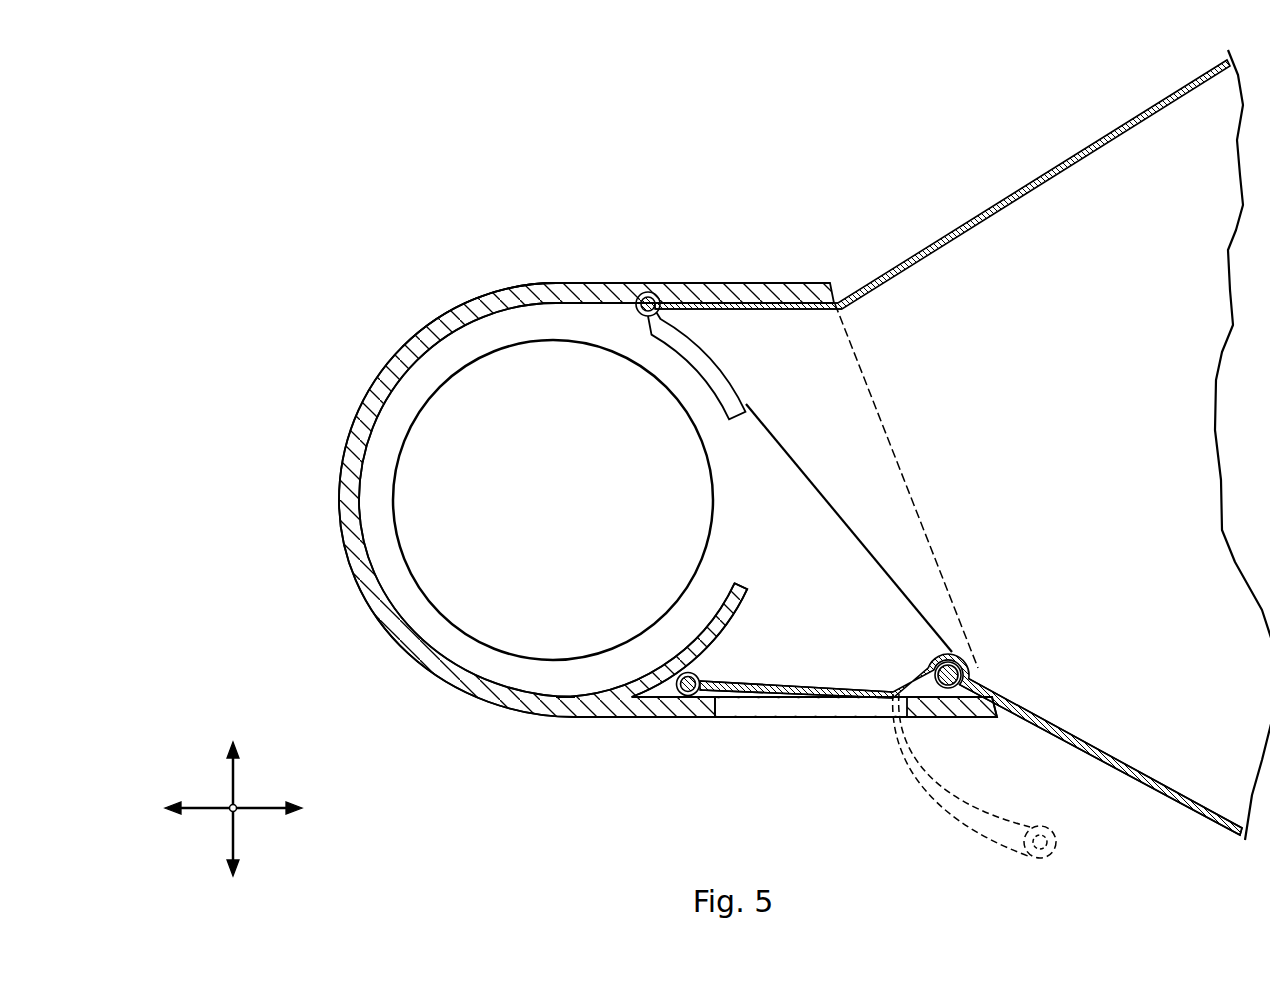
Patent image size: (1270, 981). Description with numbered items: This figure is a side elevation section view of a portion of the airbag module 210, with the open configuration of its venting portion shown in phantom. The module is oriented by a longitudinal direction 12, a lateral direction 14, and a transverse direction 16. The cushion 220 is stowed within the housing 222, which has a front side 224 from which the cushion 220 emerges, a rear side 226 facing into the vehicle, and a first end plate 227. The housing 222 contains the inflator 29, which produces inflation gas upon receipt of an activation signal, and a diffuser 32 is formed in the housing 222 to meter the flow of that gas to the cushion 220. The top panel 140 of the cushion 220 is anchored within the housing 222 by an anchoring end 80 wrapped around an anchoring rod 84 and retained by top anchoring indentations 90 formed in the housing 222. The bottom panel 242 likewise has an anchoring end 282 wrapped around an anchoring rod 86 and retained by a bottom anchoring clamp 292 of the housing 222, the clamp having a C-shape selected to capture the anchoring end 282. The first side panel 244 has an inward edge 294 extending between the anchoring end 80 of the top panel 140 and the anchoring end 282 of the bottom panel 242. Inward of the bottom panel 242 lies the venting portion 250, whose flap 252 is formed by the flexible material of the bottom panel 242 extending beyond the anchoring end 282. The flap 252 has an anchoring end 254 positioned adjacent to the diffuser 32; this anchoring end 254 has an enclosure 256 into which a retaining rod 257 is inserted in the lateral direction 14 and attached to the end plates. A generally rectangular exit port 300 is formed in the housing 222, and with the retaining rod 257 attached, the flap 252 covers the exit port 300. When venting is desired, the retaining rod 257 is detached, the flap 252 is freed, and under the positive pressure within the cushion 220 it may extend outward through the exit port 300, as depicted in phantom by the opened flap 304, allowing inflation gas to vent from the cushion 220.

The longitudinal direction 12 is at (268, 812).
The lateral direction 14 is at (230, 812).
The transverse direction 16 is at (235, 770).
The inflator 29 is at (535, 505).
The diffuser 32 is at (693, 610).
The anchoring end 80 is at (675, 312).
The anchoring rod 84 is at (648, 294).
The anchoring rod 86 is at (950, 652).
The top anchoring indentations 90 is at (632, 300).
The top panel 140 is at (1130, 112).
The airbag module 210 is at (660, 168).
The cushion 220 is at (1000, 172).
The housing 222 is at (540, 735).
The front side 224 is at (871, 386).
The rear side 226 is at (337, 525).
The first end plate 227 is at (494, 330).
The bottom panel 242 is at (1155, 797).
The first side panel 244 is at (1105, 463).
The venting portion 250 is at (800, 668).
The flap 252 is at (845, 690).
The anchoring end 254 is at (700, 628).
The enclosure 256 is at (692, 688).
The retaining rod 257 is at (683, 700).
The anchoring end 282 is at (980, 670).
The bottom anchoring clamp 292 is at (935, 718).
The inward edge 294 is at (797, 470).
The exit port 300 is at (720, 707).
The opened flap 304 is at (930, 805).